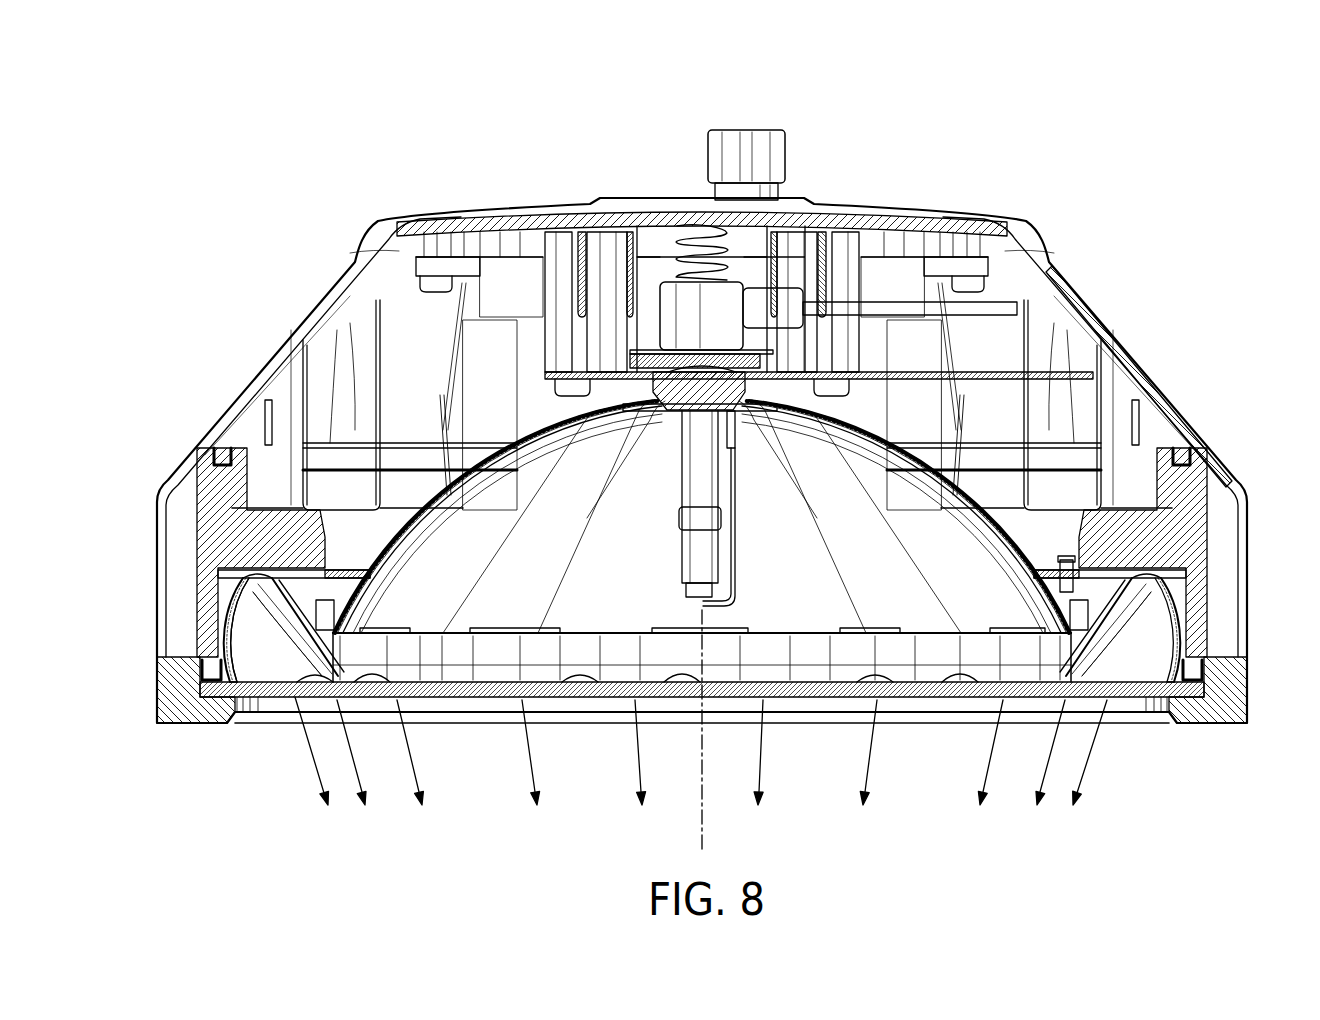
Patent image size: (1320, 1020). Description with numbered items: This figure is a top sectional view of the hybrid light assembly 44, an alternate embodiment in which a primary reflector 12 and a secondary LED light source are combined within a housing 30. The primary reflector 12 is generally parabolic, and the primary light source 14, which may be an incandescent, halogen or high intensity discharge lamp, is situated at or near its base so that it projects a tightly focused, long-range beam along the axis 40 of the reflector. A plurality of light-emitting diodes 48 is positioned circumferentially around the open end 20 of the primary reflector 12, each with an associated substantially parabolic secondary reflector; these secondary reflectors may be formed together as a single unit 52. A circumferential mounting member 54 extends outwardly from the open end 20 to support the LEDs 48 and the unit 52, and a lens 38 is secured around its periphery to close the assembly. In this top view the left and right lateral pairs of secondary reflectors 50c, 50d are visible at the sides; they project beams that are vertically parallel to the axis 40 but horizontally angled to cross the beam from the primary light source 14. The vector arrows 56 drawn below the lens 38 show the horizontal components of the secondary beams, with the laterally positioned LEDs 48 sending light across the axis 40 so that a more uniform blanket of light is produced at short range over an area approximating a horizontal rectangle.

The hybrid light assembly 44 is at (1122, 108).
The housing 30 is at (1099, 325).
The primary reflector 12 is at (436, 502).
The circumferential mounting member 54 is at (226, 563).
The single unit 52 is at (228, 598).
The light-emitting diodes 48 is at (232, 614).
The primary light source 14 is at (788, 585).
The open end 20 is at (470, 640).
The vector arrows 56 is at (534, 765).
The lens 38 is at (918, 698).
The left lateral pair of secondary reflectors 50c is at (259, 658).
The right lateral pair of secondary reflectors 50d is at (1143, 663).
The axis 40 is at (708, 832).